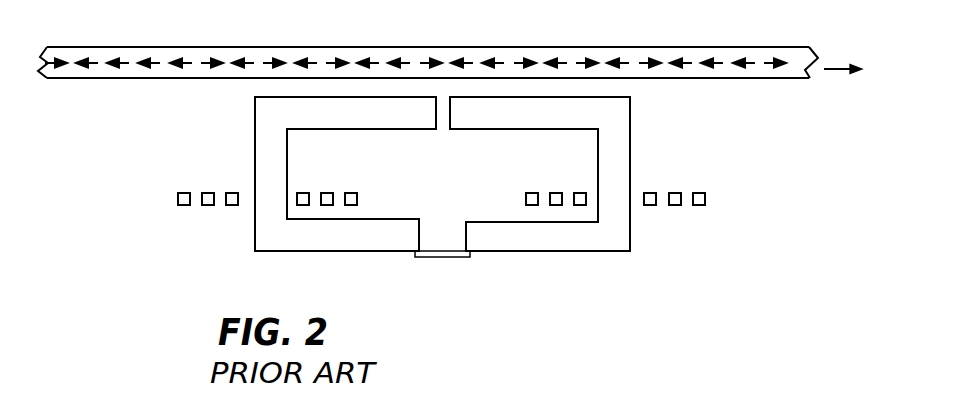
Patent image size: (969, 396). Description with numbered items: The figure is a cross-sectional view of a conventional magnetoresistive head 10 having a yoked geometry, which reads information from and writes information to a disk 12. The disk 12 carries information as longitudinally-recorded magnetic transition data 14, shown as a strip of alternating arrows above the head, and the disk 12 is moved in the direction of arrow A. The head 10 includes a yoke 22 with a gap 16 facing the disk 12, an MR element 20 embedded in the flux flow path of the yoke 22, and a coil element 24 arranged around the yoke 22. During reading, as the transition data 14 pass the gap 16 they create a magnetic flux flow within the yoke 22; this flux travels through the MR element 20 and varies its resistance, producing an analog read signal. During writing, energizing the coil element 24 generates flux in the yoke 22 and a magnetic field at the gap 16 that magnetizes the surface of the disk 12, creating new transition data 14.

The magnetoresistive head 10 is at (474, 200).
The disk 12 is at (742, 50).
The longitudinally-recorded magnetic transition data 14 is at (651, 62).
The gap 16 is at (443, 122).
The MR element 20 is at (442, 258).
The yoke 22 is at (255, 111).
The coil element 24 is at (178, 196).